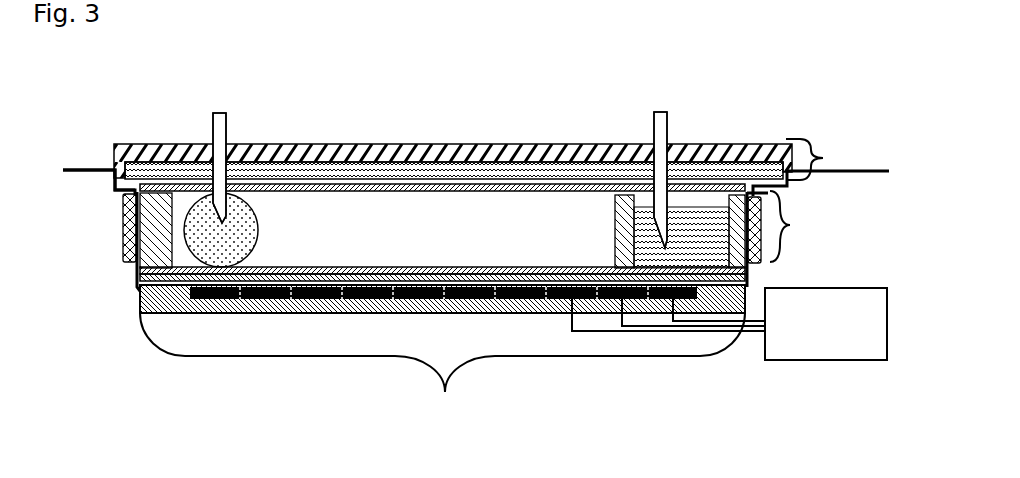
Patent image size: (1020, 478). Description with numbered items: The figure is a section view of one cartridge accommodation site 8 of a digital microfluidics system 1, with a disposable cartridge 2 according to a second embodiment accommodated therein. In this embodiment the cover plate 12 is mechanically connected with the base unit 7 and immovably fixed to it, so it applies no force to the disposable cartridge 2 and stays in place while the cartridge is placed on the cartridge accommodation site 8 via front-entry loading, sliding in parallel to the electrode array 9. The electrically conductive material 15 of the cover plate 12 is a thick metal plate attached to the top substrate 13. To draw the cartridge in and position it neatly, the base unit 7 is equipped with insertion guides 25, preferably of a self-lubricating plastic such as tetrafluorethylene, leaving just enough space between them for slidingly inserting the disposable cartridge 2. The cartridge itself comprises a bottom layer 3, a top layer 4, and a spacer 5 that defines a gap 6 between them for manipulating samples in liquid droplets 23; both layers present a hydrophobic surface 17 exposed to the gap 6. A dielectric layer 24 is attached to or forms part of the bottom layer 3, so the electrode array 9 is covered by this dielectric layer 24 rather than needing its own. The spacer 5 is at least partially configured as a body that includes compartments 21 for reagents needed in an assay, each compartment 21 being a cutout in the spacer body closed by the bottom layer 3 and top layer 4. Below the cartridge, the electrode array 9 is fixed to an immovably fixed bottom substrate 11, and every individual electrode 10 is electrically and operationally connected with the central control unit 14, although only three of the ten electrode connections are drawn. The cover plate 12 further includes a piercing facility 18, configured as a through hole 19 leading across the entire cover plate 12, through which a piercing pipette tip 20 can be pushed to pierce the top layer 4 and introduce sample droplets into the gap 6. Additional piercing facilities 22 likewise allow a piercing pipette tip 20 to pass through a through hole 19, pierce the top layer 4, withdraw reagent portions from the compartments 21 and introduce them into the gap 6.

The digital microfluidics system 1 is at (830, 77).
The disposable cartridge 2 is at (788, 226).
The bottom layer 3 is at (138, 268).
The top layer 4 is at (135, 187).
The spacer 5 is at (123, 224).
The gap 6 is at (308, 239).
The base unit 7 is at (83, 160).
The cartridge accommodation site 8 is at (442, 367).
The electrode array 9 is at (295, 330).
The electrode 10 is at (520, 287).
The bottom substrate 11 is at (712, 315).
The cover plate 12 is at (832, 157).
The top substrate 13 is at (345, 152).
The central control unit 14 is at (795, 344).
The electrically conductive material 15 is at (418, 163).
The hydrophobic surface 17 is at (443, 191).
The piercing facility 18 is at (165, 108).
The through hole 19 is at (210, 157).
The piercing pipette tip 20 is at (223, 133).
The compartment 21 is at (692, 239).
The additional piercing facility 22 is at (637, 112).
The liquid droplet 23 is at (184, 239).
The dielectric layer 24 is at (183, 266).
The insertion guide 25 is at (123, 242).